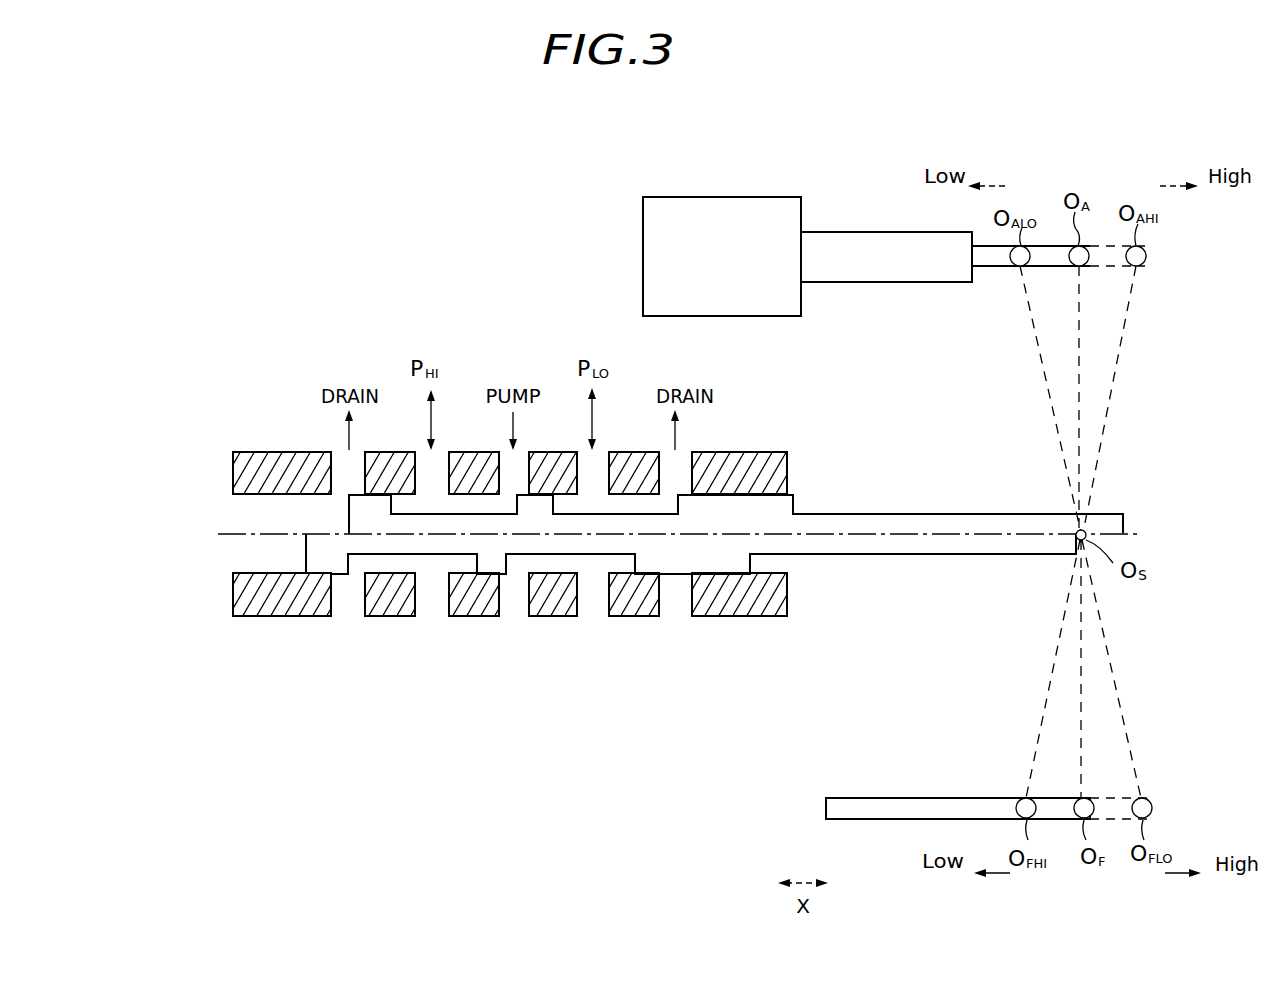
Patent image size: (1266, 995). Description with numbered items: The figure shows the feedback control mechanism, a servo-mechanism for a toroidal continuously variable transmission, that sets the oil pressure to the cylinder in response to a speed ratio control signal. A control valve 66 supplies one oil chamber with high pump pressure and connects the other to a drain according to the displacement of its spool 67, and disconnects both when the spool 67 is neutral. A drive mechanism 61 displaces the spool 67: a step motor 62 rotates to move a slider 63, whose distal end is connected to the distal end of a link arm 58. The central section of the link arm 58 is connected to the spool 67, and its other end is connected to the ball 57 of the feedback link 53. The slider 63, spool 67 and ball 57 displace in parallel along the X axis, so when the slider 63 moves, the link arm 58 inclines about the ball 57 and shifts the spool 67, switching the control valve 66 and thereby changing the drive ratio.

The feedback link 53 is at (862, 821).
The ball 57 is at (1026, 800).
The link arm 58 is at (1058, 428).
The drive mechanism 61 is at (887, 283).
The step motor 62 is at (771, 197).
The slider 63 is at (992, 268).
The control valve 66 is at (218, 433).
The spool 67 is at (212, 498).